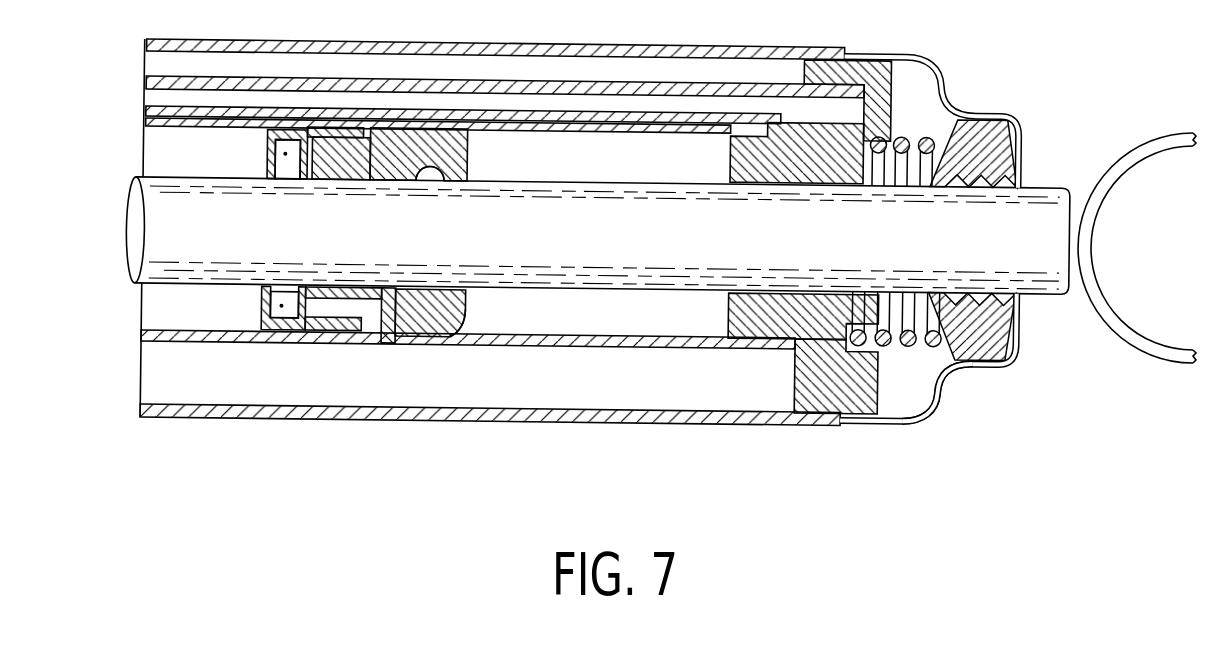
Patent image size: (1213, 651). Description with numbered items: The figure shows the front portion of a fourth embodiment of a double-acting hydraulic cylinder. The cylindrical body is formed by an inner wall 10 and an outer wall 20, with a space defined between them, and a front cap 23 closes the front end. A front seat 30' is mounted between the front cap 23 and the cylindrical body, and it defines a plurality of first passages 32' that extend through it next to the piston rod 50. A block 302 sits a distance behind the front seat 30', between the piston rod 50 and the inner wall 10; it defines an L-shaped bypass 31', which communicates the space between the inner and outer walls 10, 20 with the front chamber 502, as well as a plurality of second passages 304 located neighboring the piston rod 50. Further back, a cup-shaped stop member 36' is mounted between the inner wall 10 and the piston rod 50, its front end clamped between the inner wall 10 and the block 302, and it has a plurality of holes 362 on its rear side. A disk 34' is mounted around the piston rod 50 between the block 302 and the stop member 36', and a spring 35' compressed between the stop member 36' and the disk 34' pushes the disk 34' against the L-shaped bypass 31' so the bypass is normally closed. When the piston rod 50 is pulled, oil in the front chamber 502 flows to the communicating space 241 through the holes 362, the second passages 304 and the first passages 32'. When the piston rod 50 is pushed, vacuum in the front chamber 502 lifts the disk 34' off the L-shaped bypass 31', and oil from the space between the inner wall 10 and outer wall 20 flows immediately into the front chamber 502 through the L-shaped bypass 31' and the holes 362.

The inner wall 10 is at (643, 130).
The outer wall 20 is at (633, 422).
The front cap 23 is at (1010, 363).
The communicating space 241 is at (910, 398).
The front seat 30' is at (842, 274).
The L-shaped bypass 31' is at (418, 232).
The first passages 32' is at (804, 231).
The disk 34' is at (347, 235).
The spring 35' is at (286, 229).
The cup-shaped stop member 36' is at (251, 179).
The piston rod 50 is at (134, 276).
The block 302 is at (478, 307).
The second passages 304 is at (420, 173).
The holes 362 is at (261, 312).
The front chamber 502 is at (155, 312).